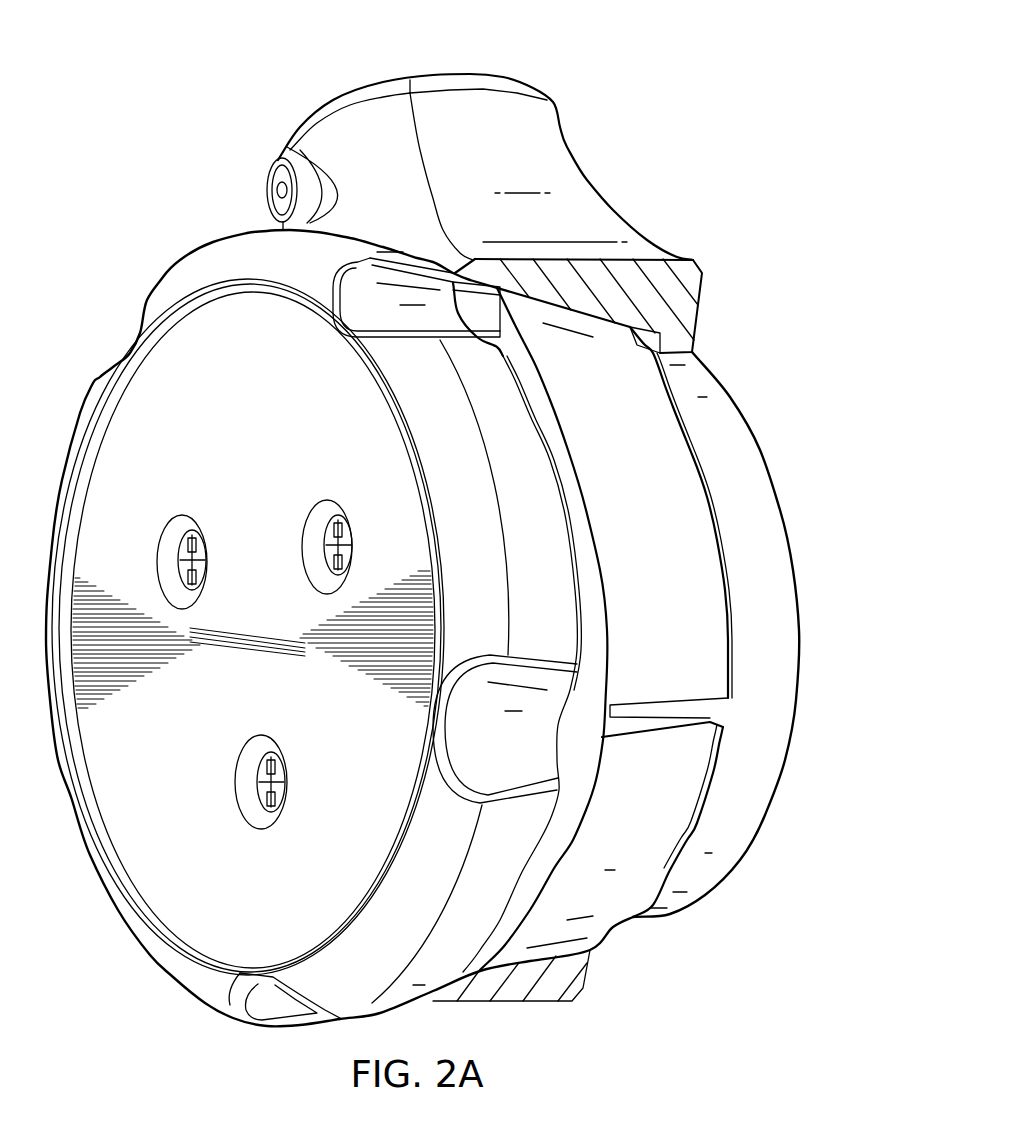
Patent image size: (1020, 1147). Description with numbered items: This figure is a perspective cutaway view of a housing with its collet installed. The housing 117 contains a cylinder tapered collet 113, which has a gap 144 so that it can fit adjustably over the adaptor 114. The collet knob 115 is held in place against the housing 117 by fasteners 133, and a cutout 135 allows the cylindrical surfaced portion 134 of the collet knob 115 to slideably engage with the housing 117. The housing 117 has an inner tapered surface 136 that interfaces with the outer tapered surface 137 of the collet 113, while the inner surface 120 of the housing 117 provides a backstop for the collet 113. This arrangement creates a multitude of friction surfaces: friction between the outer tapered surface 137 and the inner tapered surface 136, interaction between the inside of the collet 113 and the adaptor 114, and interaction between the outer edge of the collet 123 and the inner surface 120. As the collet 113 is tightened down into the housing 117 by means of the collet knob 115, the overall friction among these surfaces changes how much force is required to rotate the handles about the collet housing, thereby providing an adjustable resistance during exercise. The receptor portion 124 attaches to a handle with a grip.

The collet 113 is at (605, 918).
The adaptor 114 is at (732, 867).
The collet knob 115 is at (285, 1027).
The housing 117 is at (603, 227).
The inner surface 120 is at (662, 340).
The outer edge of the collet 123 is at (732, 617).
The receptor portion 124 is at (502, 102).
The fasteners 133 is at (177, 560).
The cylindrical surfaced portion 134 is at (590, 517).
The cutout 135 is at (458, 288).
The inner tapered surface 136 is at (630, 335).
The outer tapered surface 137 is at (703, 552).
The gap 144 is at (664, 722).